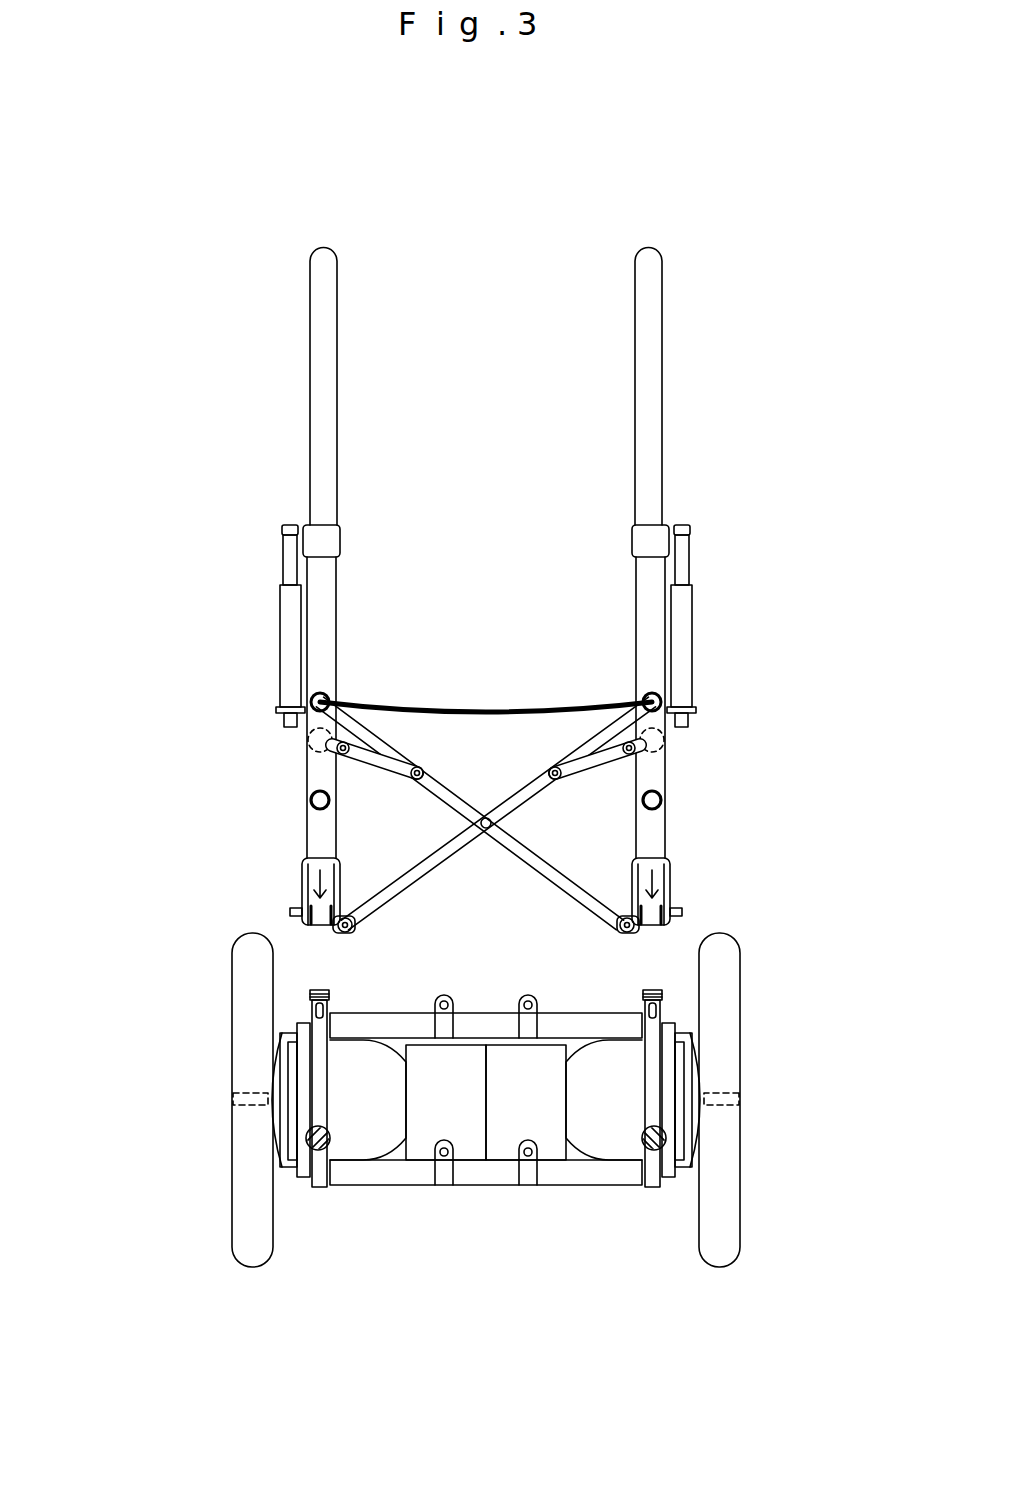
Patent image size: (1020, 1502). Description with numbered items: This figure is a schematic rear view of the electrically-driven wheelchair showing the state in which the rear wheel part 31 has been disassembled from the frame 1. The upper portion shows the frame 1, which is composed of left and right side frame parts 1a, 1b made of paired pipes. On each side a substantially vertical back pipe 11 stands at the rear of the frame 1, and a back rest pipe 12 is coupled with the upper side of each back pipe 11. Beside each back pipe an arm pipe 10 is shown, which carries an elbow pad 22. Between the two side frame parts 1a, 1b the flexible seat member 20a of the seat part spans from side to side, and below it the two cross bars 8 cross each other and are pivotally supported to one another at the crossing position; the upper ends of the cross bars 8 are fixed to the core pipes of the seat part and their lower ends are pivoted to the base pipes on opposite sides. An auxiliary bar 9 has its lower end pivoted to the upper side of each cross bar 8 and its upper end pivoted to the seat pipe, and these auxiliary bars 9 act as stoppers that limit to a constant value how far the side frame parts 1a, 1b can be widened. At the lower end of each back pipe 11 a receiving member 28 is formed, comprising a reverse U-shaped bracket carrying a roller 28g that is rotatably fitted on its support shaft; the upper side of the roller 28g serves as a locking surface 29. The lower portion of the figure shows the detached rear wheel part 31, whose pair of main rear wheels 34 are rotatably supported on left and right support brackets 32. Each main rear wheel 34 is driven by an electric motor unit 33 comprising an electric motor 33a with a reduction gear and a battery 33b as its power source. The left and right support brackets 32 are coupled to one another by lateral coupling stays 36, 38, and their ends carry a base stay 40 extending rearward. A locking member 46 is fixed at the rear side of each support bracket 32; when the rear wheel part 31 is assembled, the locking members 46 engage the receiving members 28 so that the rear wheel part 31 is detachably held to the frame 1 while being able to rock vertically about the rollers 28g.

The frame 1 is at (183, 830).
The left side frame part 1a is at (348, 248).
The right side frame part 1b is at (622, 248).
The cross bar 8 is at (453, 783).
The auxiliary bar 9 is at (368, 776).
The arm pipe 10 is at (287, 570).
The back pipe 11 is at (325, 605).
The back rest pipe 12 is at (323, 393).
The seat member 20a is at (487, 710).
The elbow pad 22 is at (292, 523).
The receiving member 28 is at (308, 862).
The roller 28g is at (315, 932).
The locking surface 29 is at (300, 887).
The rear wheel part 31 is at (192, 1045).
The support bracket 32 is at (320, 1190).
The electric motor unit 33 is at (468, 1287).
The electric motor 33a is at (377, 1145).
The battery 33b is at (452, 1142).
The main rear wheel 34 is at (247, 1210).
The coupling stay 36 is at (370, 1027).
The coupling stay 38 is at (358, 1183).
The base stay 40 is at (307, 1138).
The locking member 46 is at (305, 975).